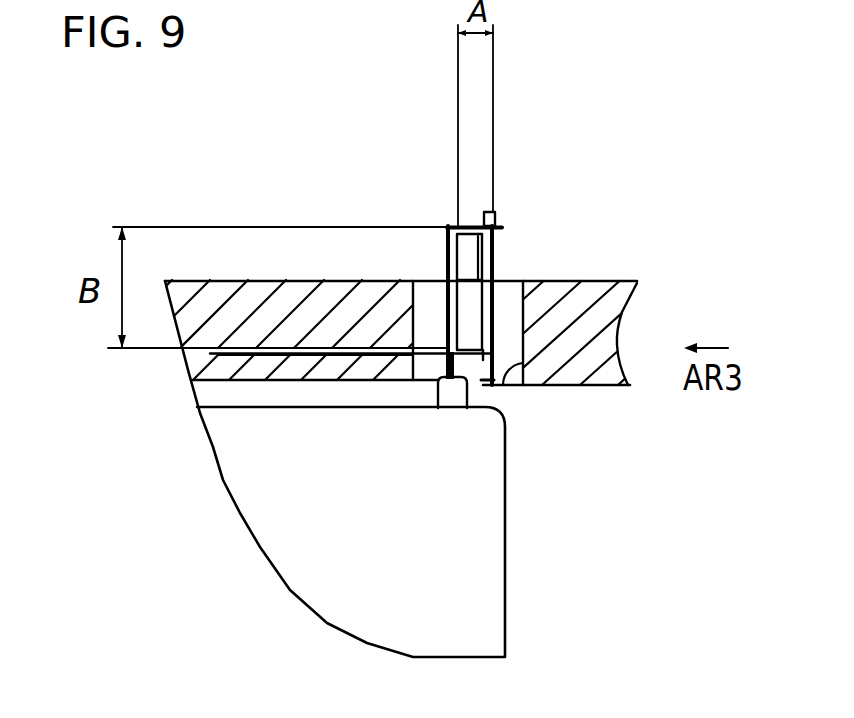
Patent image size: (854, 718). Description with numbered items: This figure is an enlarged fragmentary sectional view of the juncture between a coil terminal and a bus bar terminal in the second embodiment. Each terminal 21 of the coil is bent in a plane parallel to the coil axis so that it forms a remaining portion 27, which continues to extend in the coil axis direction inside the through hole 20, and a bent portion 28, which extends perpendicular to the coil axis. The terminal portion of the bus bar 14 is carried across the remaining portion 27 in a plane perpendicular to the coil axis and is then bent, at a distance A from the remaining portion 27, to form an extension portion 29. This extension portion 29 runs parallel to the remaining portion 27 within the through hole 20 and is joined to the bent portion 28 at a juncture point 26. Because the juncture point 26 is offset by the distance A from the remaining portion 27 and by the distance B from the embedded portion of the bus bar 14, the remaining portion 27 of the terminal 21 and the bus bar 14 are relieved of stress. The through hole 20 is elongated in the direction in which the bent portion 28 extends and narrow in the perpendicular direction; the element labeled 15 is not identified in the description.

The bus bar 14 is at (270, 377).
The plate 15 is at (637, 283).
The through hole 20 is at (503, 380).
The terminal 21 is at (434, 199).
The juncture point 26 is at (494, 221).
The remaining portion 27 is at (446, 243).
The bent portion 28 is at (467, 225).
The extension portion 29 is at (497, 262).